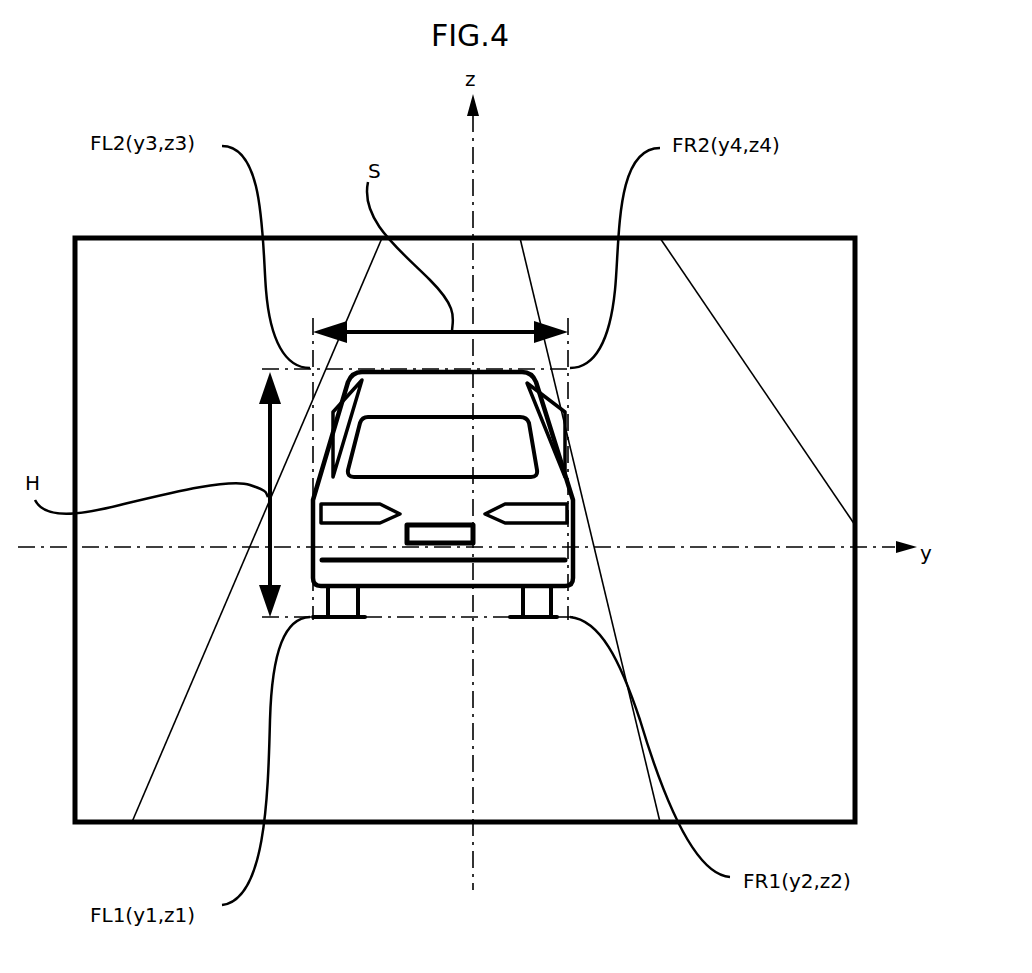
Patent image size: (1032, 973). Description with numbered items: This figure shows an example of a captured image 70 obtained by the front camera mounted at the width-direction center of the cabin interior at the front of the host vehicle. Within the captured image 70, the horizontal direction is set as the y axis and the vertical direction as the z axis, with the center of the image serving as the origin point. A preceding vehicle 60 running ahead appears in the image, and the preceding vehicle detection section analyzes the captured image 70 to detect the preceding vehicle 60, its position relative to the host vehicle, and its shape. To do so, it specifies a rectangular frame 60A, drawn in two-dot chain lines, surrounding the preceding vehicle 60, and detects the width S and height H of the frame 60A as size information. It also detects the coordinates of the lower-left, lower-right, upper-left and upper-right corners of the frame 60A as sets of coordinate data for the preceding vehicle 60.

The captured image 70 is at (772, 238).
The preceding vehicle 60 is at (543, 493).
The rectangular frame 60A is at (510, 617).